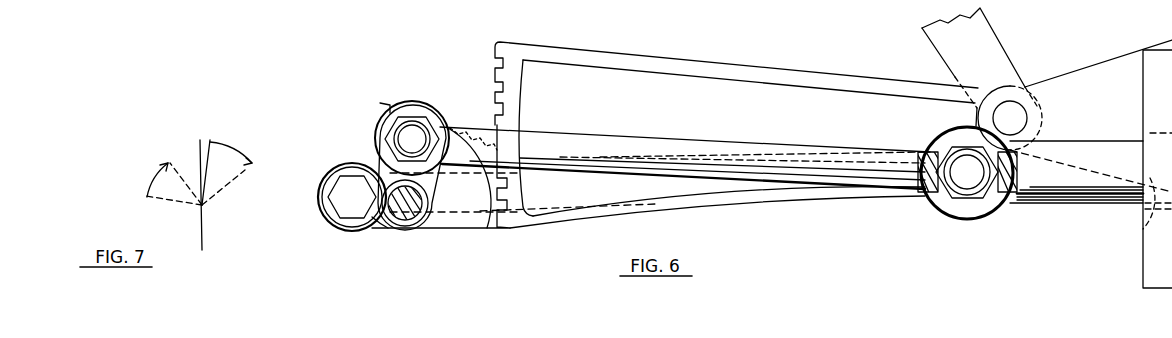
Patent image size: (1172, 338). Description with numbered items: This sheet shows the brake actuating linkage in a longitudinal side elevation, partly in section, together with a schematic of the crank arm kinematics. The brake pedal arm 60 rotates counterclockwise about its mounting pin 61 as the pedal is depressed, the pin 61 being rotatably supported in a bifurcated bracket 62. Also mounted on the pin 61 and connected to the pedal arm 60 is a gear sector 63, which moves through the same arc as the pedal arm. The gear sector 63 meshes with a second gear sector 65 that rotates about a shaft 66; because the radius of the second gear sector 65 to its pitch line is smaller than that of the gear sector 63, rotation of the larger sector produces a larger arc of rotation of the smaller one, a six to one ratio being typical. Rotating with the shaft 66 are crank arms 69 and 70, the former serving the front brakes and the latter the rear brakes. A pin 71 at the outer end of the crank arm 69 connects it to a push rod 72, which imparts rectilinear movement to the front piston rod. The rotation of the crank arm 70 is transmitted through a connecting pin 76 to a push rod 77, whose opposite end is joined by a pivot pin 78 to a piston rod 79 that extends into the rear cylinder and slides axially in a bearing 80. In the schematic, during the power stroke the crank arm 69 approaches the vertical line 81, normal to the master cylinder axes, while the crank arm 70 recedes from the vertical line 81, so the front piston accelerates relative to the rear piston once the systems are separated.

In FIG. 6, the brake pedal arm 60 is at (983, 41).
In FIG. 6, the mounting pin 61 is at (1015, 117).
In FIG. 6, the bifurcated bracket 62 is at (1110, 70).
In FIG. 6, the gear sector 63 is at (768, 63).
In FIG. 6, the second gear sector 65 is at (468, 224).
In FIG. 6, the shaft 66 is at (418, 221).
In FIG. 7, the crank arm 69 is at (172, 200).
In FIG. 6, the crank arm 69 is at (372, 217).
In FIG. 7, the crank arm 70 is at (207, 173).
In FIG. 6, the crank arm 70 is at (437, 178).
In FIG. 6, the pin 71 is at (338, 202).
In FIG. 6, the push rod 72 is at (809, 193).
In FIG. 6, the connecting pin 76 is at (415, 138).
In FIG. 6, the push rod 77 is at (673, 141).
In FIG. 6, the pivot pin 78 is at (958, 178).
In FIG. 6, the piston rod 79 is at (1077, 187).
In FIG. 6, the bearing 80 is at (1148, 224).
In FIG. 7, the vertical line 81 is at (204, 217).